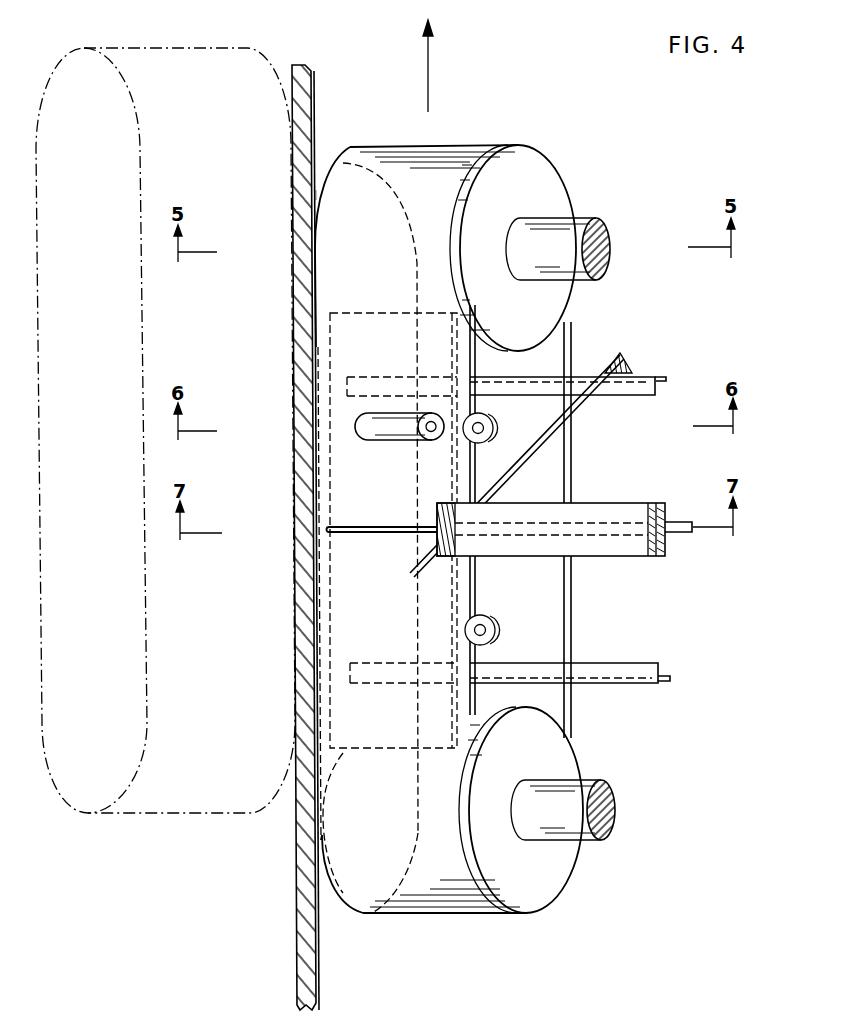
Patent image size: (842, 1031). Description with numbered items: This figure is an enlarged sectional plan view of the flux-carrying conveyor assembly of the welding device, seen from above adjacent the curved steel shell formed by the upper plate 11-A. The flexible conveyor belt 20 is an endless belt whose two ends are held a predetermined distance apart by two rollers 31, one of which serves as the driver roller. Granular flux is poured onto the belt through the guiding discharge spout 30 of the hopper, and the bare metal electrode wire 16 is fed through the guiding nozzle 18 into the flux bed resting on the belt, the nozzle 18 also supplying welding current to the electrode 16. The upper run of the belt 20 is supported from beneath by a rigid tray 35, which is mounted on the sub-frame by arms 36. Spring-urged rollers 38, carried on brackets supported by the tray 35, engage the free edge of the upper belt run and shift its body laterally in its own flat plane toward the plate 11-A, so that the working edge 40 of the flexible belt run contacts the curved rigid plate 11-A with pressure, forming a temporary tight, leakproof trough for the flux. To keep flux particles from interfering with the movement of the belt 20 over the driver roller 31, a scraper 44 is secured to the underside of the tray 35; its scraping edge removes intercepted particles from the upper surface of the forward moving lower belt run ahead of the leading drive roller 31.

The upper plate 11-A is at (297, 950).
The bare metal electrode wire 16 is at (334, 531).
The guiding nozzle 18 is at (598, 503).
The flexible conveyor belt 20 is at (572, 594).
The guiding discharge spout 30 is at (356, 428).
The rollers 31 is at (553, 348).
The tray 35 is at (328, 347).
The arms 36 is at (643, 377).
The rollers 38 is at (497, 627).
The working edge 40 is at (318, 196).
The scraper 44 is at (584, 398).